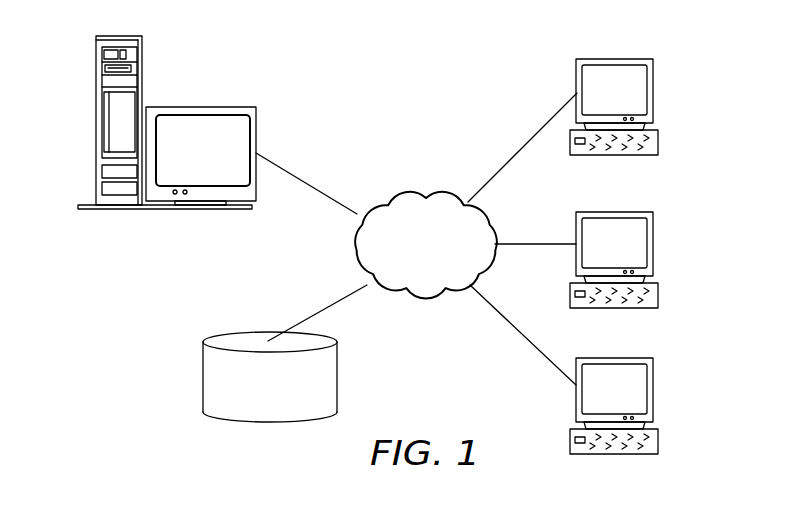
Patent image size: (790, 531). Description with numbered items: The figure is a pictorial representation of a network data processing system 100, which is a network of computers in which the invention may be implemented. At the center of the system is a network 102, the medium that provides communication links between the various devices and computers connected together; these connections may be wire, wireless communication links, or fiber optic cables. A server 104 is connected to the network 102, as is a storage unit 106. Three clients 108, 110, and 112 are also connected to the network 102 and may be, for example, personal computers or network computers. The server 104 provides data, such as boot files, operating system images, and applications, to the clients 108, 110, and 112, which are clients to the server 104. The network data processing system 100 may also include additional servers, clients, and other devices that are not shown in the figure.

The network data processing system 100 is at (482, 66).
The network 102 is at (396, 190).
The server 104 is at (96, 125).
The storage unit 106 is at (202, 376).
The client 108 is at (653, 93).
The client 110 is at (653, 244).
The client 112 is at (653, 393).